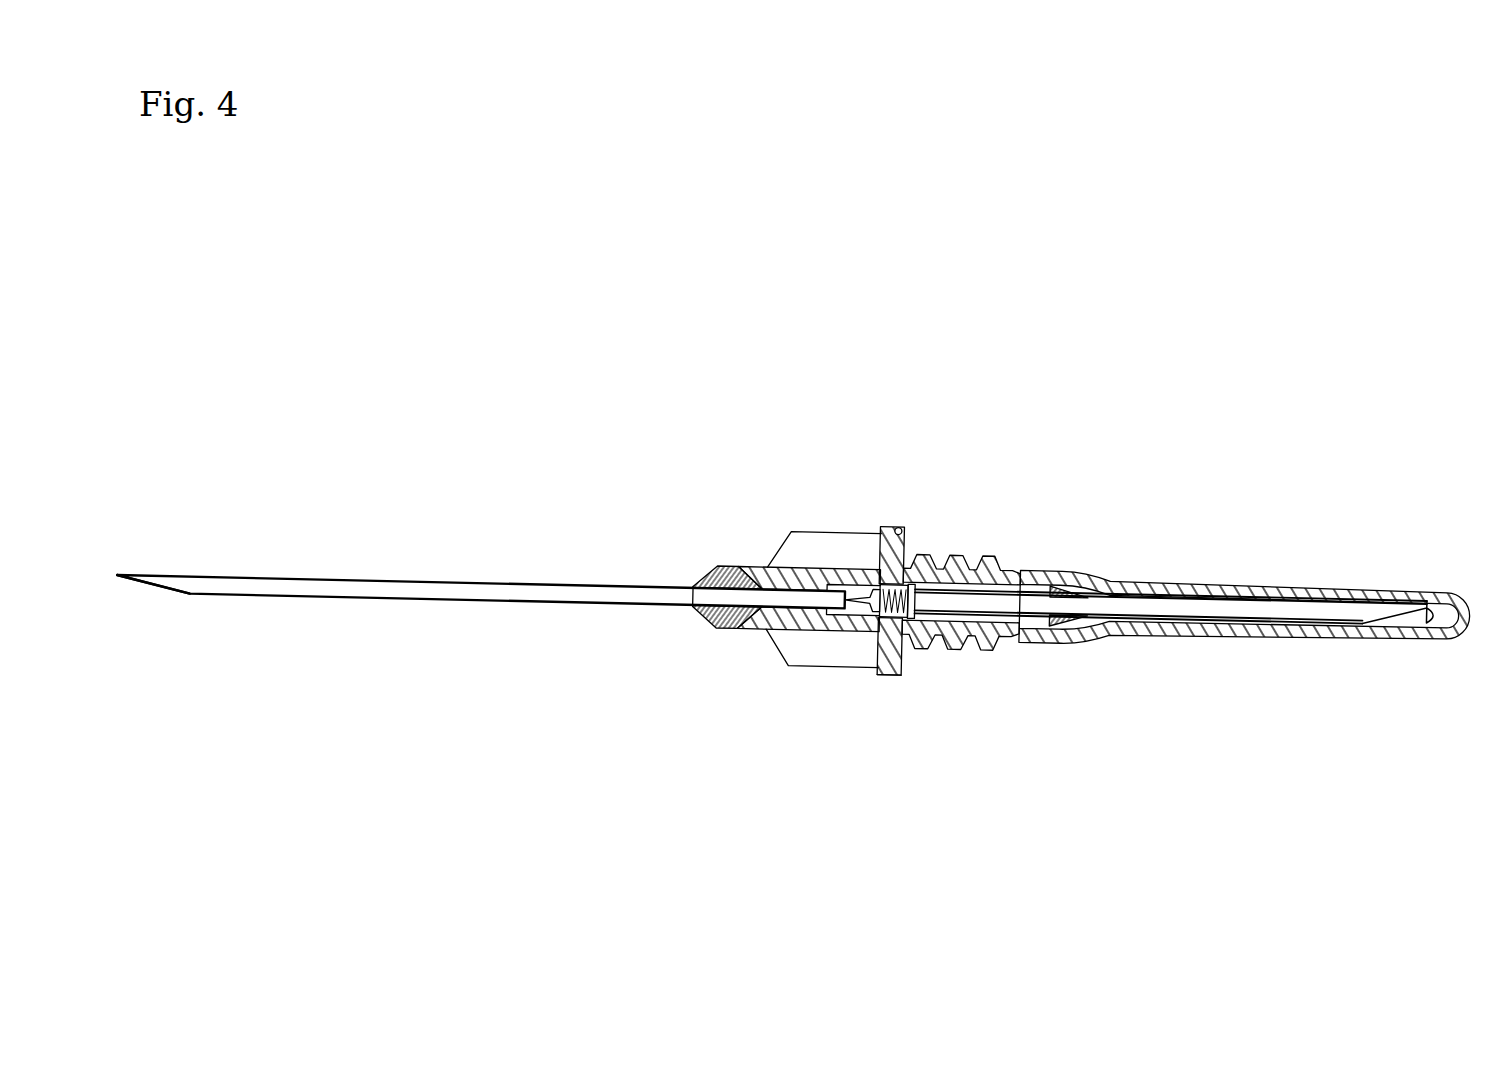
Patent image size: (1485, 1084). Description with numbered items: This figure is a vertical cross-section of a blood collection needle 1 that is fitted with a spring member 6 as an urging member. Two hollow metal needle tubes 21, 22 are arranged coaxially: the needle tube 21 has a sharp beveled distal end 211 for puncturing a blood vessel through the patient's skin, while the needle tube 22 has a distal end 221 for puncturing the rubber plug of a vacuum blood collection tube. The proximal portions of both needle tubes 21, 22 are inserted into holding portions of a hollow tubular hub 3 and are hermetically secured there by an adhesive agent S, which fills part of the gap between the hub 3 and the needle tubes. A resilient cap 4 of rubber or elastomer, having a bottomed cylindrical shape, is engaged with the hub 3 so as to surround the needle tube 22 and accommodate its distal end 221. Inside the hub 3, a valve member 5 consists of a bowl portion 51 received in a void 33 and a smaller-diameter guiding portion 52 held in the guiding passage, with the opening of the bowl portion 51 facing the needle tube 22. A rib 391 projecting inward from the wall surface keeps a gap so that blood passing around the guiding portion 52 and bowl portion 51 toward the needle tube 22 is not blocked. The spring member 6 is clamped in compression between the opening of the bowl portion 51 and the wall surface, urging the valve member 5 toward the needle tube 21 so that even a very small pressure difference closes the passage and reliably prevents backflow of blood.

The blood collection needle 1 is at (940, 498).
The needle tube 21 is at (397, 577).
The distal end 211 is at (117, 574).
The needle tube 22 is at (1308, 623).
The distal end 221 is at (1428, 622).
The hub 3 is at (889, 526).
The void 33 is at (893, 677).
The rib 391 is at (917, 650).
The resilient cap 4 is at (1248, 587).
The valve member 5 is at (863, 638).
The bowl portion 51 is at (866, 549).
The guiding portion 52 is at (813, 655).
The spring member 6 is at (881, 584).
The adhesive agent S is at (712, 574).